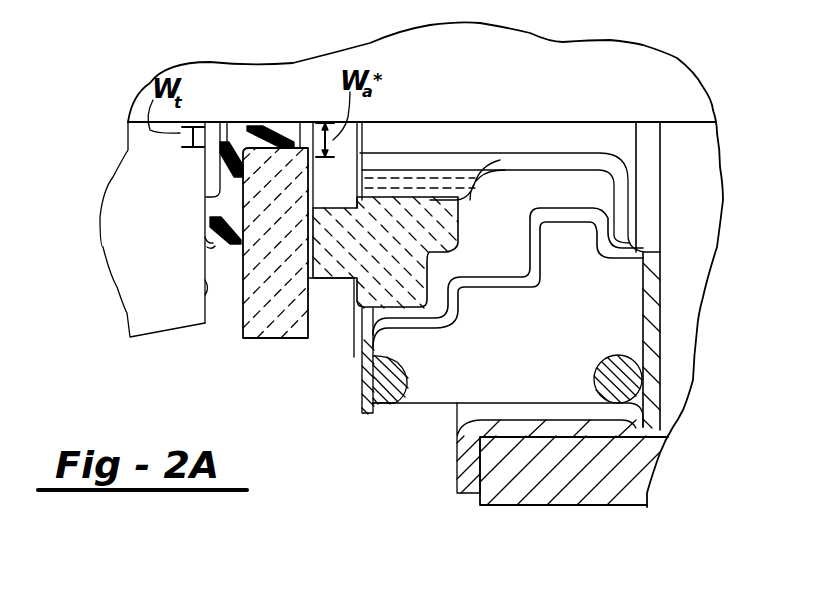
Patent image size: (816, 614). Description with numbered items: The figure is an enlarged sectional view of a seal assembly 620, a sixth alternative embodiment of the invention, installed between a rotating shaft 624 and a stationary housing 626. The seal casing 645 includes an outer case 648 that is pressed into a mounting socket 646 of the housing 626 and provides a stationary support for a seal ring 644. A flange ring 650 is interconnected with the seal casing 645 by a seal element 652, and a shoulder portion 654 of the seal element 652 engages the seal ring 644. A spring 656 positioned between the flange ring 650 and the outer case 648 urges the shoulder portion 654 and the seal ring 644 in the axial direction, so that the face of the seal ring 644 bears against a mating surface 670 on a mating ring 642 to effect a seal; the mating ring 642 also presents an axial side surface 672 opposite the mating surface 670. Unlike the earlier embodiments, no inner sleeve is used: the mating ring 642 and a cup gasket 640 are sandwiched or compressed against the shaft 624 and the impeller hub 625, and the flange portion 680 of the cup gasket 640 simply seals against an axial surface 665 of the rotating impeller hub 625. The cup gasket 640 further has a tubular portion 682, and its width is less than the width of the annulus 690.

The seal assembly 620 is at (392, 458).
The shaft 624 is at (273, 77).
The impeller hub 625 is at (130, 152).
The housing 626 is at (560, 487).
The cup gasket 640 is at (207, 200).
The mating ring 642 is at (267, 338).
The seal ring 644 is at (330, 257).
The seal casing 645 is at (661, 208).
The mounting socket 646 is at (673, 427).
The outer case 648 is at (653, 343).
The flange ring 650 is at (360, 370).
The seal element 652 is at (530, 267).
The shoulder portion 654 is at (430, 268).
The spring 656 is at (440, 393).
The axial surface 665 is at (210, 287).
The mating surface 670 is at (313, 323).
The axial side surface 672 is at (243, 293).
The flange portion 680 is at (205, 250).
The tubular portion 682 is at (247, 133).
The annulus 690 is at (303, 120).